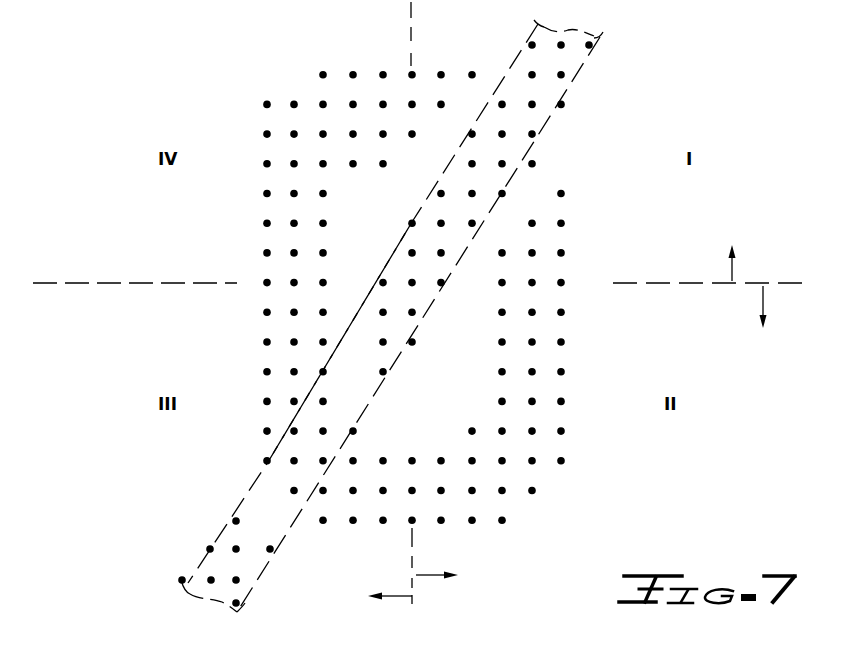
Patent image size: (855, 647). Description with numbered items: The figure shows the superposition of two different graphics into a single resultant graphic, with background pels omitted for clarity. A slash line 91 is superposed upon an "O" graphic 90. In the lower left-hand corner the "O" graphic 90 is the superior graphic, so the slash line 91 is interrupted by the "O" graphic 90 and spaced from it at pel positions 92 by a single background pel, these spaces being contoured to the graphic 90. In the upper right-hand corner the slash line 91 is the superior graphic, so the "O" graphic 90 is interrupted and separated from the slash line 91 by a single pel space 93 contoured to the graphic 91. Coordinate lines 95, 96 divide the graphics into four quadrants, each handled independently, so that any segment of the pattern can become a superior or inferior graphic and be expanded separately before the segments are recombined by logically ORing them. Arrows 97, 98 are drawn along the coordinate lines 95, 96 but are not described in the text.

The "O" graphic 90 is at (256, 121).
The slash line 91 is at (222, 527).
The pel positions 92 is at (256, 504).
The single pel space 93 is at (556, 170).
The coordinate line 95 is at (411, 8).
The coordinate line 96 is at (95, 281).
The horizontal displacement arrows 97 is at (391, 596).
The vertical displacement arrows 98 is at (734, 271).